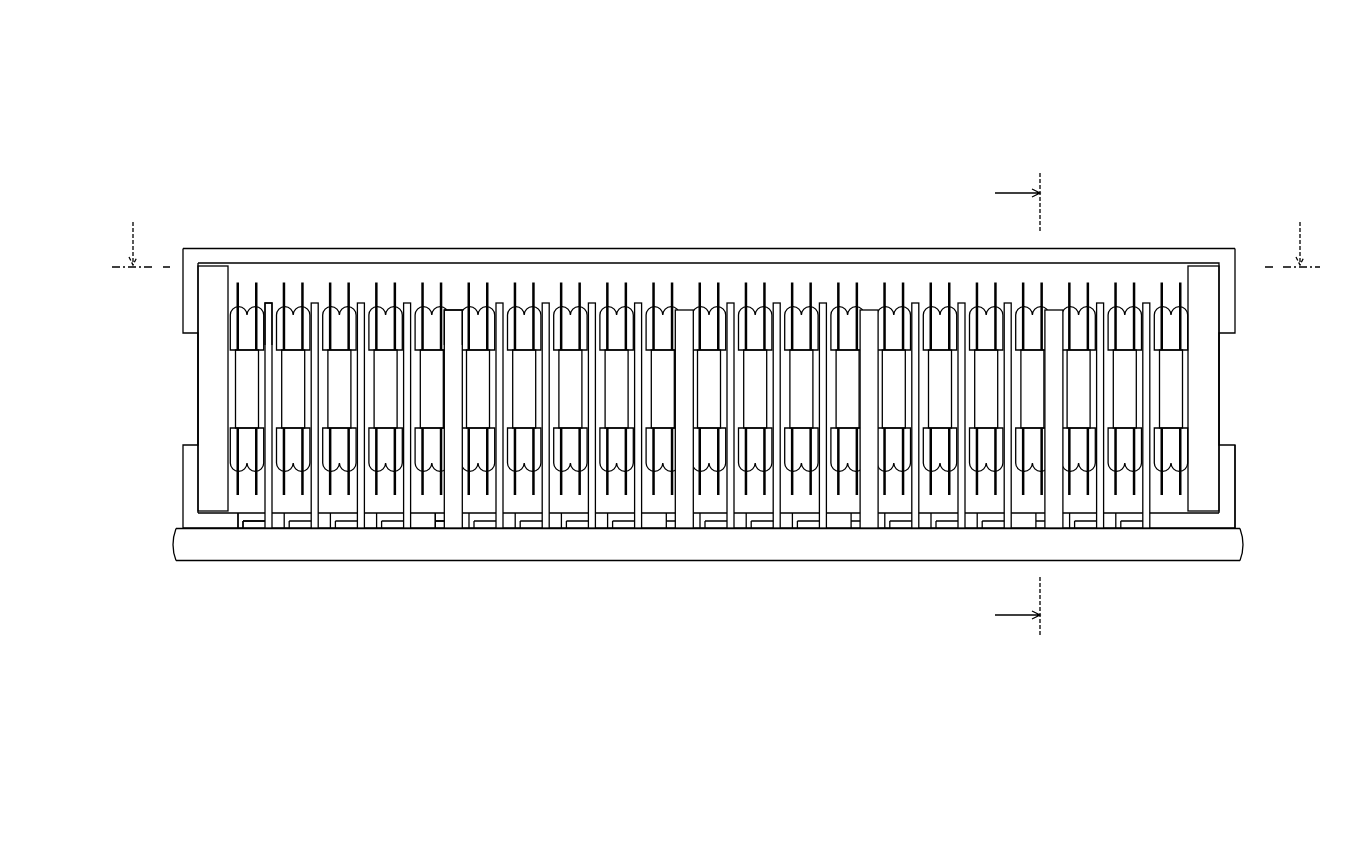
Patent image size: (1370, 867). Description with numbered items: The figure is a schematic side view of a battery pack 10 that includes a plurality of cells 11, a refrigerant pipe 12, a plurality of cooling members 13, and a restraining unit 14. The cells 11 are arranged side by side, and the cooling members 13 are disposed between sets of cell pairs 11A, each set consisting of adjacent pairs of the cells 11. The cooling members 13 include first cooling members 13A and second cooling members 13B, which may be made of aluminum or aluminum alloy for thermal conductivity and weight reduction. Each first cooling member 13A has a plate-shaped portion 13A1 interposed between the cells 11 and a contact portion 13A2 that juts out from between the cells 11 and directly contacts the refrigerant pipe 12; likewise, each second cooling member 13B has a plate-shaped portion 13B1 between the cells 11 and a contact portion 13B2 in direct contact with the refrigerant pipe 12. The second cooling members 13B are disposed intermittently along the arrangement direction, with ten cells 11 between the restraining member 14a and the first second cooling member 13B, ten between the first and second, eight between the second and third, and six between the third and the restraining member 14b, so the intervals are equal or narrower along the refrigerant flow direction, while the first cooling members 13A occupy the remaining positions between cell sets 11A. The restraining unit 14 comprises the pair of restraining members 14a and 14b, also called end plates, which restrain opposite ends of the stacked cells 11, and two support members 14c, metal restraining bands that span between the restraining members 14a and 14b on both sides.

The battery pack 10 is at (967, 127).
The cell 11 is at (237, 305).
The cell pair 11A is at (251, 287).
The refrigerant pipe 12 is at (833, 530).
The cooling member 13 is at (916, 142).
The first cooling member 13A is at (731, 300).
The plate-shaped portion 13A1 is at (271, 302).
The contact portion 13A2 is at (250, 514).
The second cooling member 13B is at (458, 298).
The plate-shaped portion 13B1 is at (447, 343).
The contact portion 13B2 is at (445, 507).
The restraining unit 14 is at (1224, 236).
The restraining member 14a is at (198, 380).
The restraining member 14b is at (1219, 380).
The support member 14c is at (1140, 248).